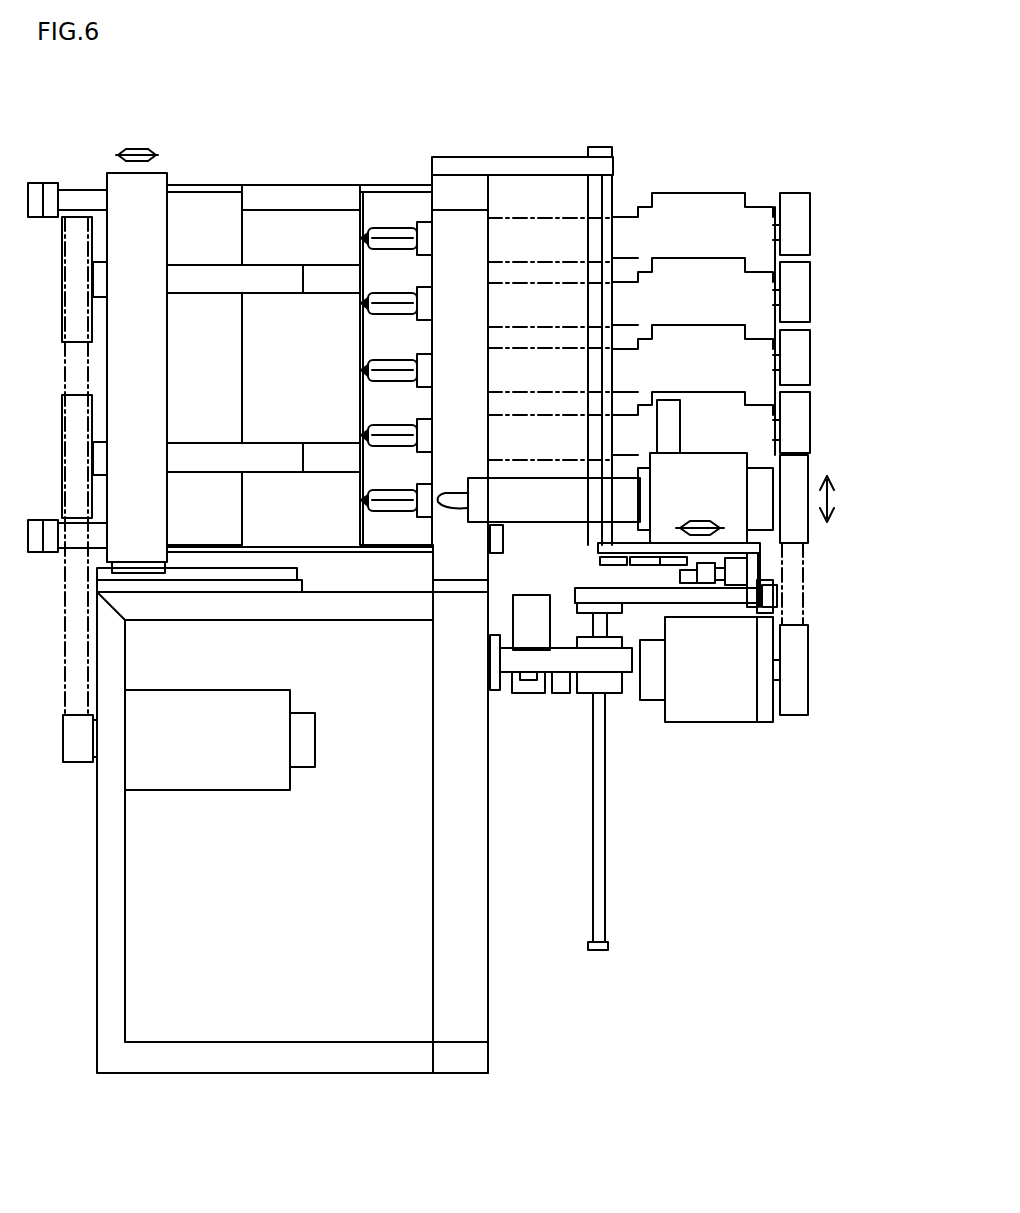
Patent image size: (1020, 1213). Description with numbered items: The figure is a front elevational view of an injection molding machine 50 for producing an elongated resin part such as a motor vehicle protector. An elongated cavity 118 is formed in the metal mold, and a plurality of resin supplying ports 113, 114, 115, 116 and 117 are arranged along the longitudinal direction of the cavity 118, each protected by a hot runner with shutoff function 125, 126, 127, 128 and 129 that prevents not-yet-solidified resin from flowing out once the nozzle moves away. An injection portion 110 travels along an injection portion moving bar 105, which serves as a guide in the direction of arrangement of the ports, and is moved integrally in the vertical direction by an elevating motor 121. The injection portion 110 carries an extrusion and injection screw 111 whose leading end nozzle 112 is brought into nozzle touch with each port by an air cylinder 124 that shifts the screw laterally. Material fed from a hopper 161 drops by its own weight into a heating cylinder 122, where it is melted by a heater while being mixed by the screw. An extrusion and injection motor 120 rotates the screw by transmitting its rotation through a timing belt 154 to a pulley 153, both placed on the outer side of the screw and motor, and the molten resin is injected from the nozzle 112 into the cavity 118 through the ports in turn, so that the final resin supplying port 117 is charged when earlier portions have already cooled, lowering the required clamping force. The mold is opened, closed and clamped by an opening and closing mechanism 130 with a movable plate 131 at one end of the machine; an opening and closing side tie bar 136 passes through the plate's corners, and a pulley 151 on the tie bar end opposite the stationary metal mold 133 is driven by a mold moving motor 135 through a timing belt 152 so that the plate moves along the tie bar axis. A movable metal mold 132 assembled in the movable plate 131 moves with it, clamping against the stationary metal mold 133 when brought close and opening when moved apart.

The injection molding machine 50 is at (716, 117).
The injection portion moving bar 105 is at (603, 892).
The injection portion 110 is at (695, 795).
The extrusion and injection screw 111 is at (560, 510).
The nozzle 112 is at (440, 502).
The resin supplying port 113 is at (360, 497).
The resin supplying port 114 is at (362, 432).
The resin supplying port 115 is at (360, 372).
The resin supplying port 116 is at (360, 305).
The resin supplying port 117 is at (360, 240).
The cavity 118 is at (360, 520).
The extrusion and injection motor 120 is at (702, 718).
The elevating motor 121 is at (528, 637).
The heating cylinder 122 is at (535, 472).
The air cylinder 124 is at (740, 568).
The hot runner with shutoff function 125 is at (383, 507).
The hot runner with shutoff function 126 is at (383, 440).
The hot runner with shutoff function 127 is at (381, 377).
The hot runner with shutoff function 128 is at (381, 310).
The hot runner with shutoff function 129 is at (381, 245).
The opening and closing mechanism 130 is at (255, 808).
The movable plate 131 is at (113, 176).
The movable metal mold 132 is at (243, 352).
The stationary metal mold 133 is at (415, 197).
The mold moving motor 135 is at (248, 690).
The opening and closing side tie bar 136 is at (262, 270).
The pulley 151 is at (70, 272).
The timing belt 152 is at (75, 607).
The pulley 153 is at (802, 530).
The timing belt 154 is at (798, 602).
The hopper 161 is at (680, 420).